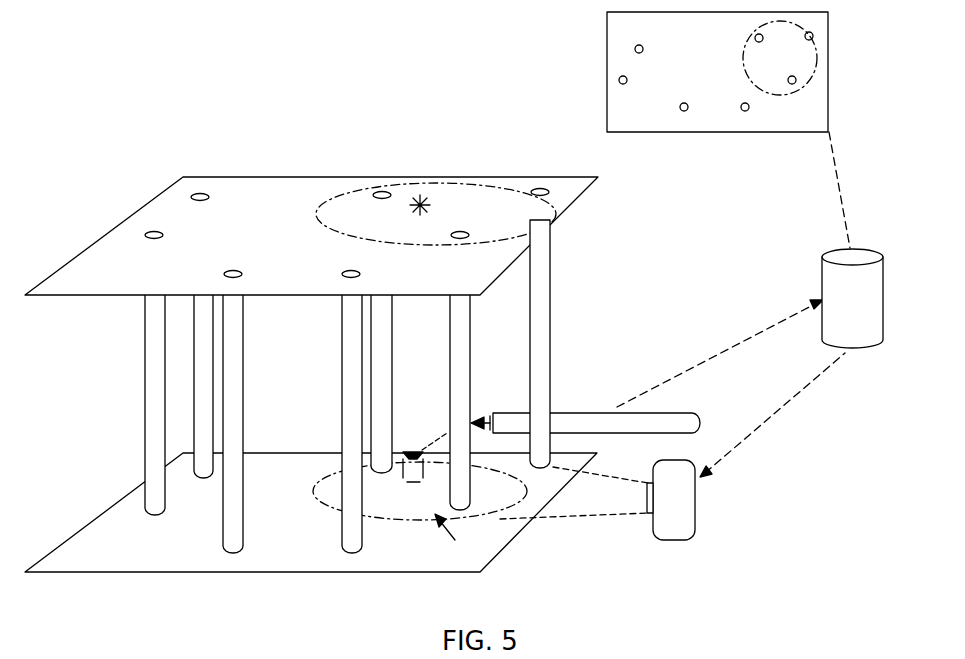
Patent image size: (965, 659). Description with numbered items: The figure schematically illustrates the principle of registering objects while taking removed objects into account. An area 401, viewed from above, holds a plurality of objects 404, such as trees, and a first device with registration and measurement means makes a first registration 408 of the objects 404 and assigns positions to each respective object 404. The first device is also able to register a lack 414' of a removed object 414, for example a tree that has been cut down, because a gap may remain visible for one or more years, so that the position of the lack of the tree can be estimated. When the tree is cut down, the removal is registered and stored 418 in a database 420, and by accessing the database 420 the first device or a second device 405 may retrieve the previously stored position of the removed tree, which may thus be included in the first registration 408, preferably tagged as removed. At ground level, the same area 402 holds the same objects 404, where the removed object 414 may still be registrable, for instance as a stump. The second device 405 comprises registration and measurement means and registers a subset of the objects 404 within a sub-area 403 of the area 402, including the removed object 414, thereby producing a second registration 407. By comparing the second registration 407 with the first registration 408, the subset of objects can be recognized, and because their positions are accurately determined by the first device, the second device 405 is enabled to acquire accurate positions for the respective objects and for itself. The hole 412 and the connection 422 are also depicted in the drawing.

The area 401 is at (150, 206).
The area 402 is at (107, 511).
The sub-area 403 is at (398, 512).
The objects 404 is at (455, 540).
The second device 405 is at (688, 492).
The second registration 407 is at (781, 98).
The first registration 408 is at (636, 126).
The hole in top plate 412 is at (560, 200).
The removed object 414 is at (585, 379).
The lack of an object 414' is at (653, 126).
The storing of the removal 418 is at (700, 366).
The database 420 is at (884, 307).
The connection line 422 is at (778, 408).